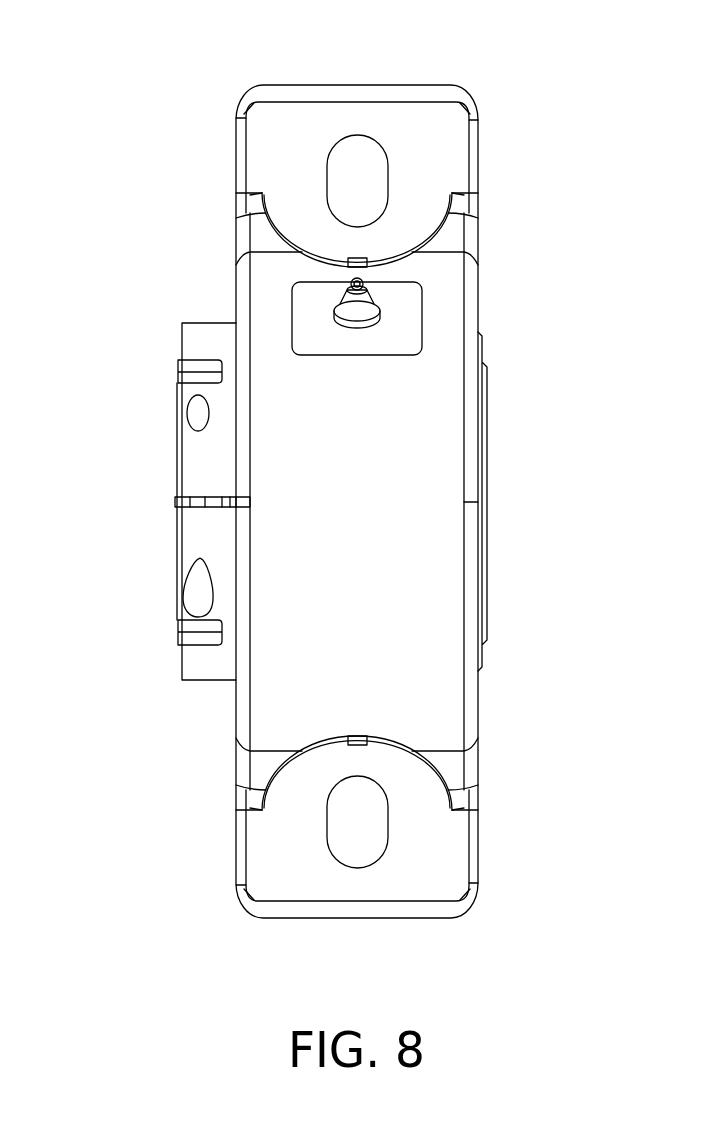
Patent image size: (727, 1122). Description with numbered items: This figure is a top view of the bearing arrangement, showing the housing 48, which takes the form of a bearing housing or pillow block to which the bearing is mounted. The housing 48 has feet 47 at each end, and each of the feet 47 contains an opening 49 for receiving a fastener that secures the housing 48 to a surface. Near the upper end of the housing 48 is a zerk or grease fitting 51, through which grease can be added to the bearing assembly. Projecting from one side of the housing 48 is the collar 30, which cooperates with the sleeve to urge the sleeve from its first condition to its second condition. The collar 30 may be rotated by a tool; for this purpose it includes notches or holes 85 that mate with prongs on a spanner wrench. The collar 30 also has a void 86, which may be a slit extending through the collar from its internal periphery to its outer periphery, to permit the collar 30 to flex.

The collar 30 is at (141, 466).
The feet 47 is at (243, 103).
The housing 48 is at (368, 481).
The openings 49 is at (394, 172).
The grease fitting 51 is at (377, 296).
The notches or holes 85 is at (171, 634).
The void 86 is at (171, 503).